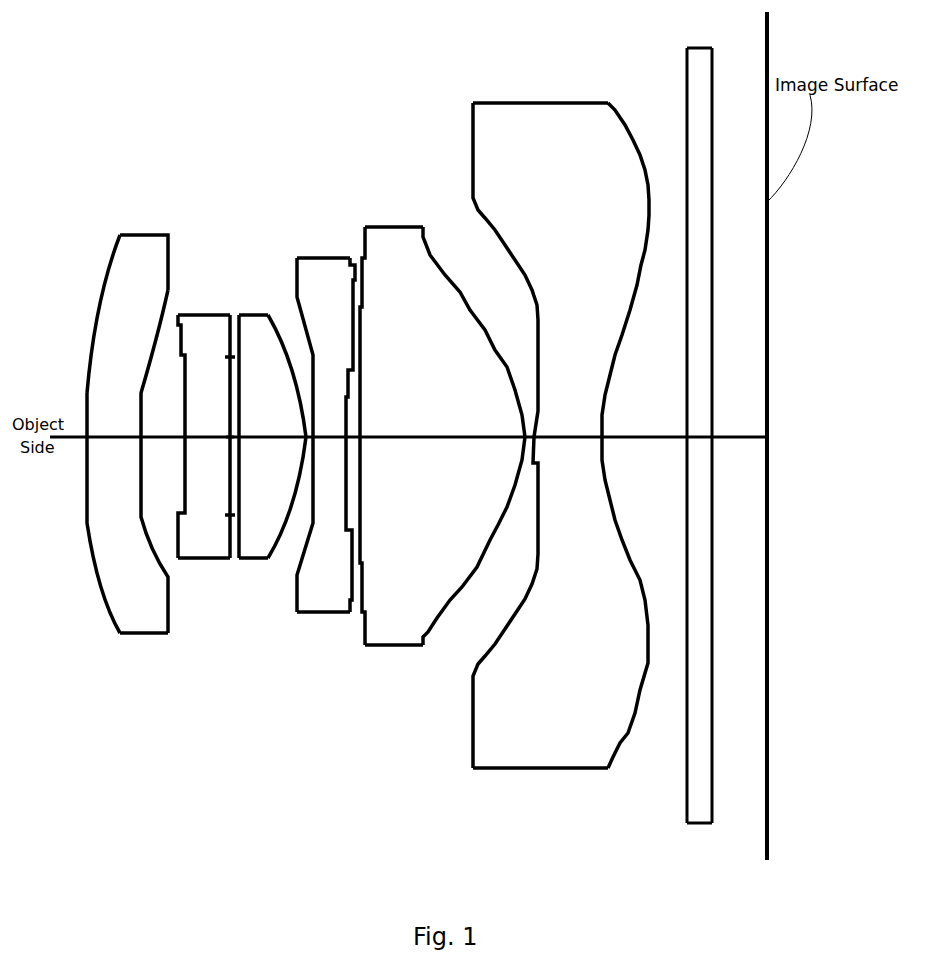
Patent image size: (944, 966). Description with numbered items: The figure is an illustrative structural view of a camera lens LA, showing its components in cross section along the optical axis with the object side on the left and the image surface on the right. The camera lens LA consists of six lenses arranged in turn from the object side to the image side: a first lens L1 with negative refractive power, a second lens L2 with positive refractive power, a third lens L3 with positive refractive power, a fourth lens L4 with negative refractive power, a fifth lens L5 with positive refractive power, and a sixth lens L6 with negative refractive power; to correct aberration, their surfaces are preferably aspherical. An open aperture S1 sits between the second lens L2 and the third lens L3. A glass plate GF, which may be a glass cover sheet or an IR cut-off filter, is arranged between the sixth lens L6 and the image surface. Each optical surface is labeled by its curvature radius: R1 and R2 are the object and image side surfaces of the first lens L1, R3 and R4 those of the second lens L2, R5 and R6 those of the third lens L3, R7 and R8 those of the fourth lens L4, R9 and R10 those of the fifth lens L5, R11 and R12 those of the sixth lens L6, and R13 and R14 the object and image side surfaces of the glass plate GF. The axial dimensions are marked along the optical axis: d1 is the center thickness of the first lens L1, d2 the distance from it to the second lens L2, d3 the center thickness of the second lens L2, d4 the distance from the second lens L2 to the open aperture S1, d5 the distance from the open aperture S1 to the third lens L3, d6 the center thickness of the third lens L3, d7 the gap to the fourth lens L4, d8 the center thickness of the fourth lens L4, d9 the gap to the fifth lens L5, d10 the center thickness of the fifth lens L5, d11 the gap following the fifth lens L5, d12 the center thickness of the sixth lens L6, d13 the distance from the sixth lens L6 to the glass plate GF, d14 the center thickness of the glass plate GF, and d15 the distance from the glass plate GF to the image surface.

The camera lens LA is at (168, 172).
The first lens L1 is at (100, 434).
The second lens L2 is at (182, 498).
The third lens L3 is at (259, 501).
The fourth lens L4 is at (312, 509).
The fifth lens L5 is at (428, 509).
The sixth lens L6 is at (523, 472).
The glass plate GF is at (660, 455).
The open aperture S1 is at (232, 352).
The curvature radius of the object side surface of the first lens R1 is at (87, 447).
The curvature radius of the image side surface of the first lens R2 is at (140, 452).
The curvature radius of the object side surface of the second lens R3 is at (183, 455).
The curvature radius of the image side surface of the second lens R4 is at (230, 455).
The curvature radius of the object side surface of the third lens R5 is at (238, 458).
The curvature radius of the image side surface of the third lens R6 is at (303, 455).
The curvature radius of the object side surface of the fourth lens R7 is at (313, 455).
The curvature radius of the image side surface of the fourth lens R8 is at (346, 455).
The curvature radius of the object side surface of the fifth lens R9 is at (360, 455).
The curvature radius of the image side surface of the fifth lens R10 is at (523, 452).
The curvature radius of the object side surface of the sixth lens R11 is at (533, 485).
The curvature radius of the image side surface of the sixth lens R12 is at (605, 488).
The curvature radius of the object side surface of the glass plate R13 is at (687, 625).
The curvature radius of the image side surface of the glass plate R14 is at (712, 630).
The center thickness of the first lens d1 is at (114, 427).
The axial distance from the first lens to the second lens d2 is at (163, 427).
The center thickness of the second lens d3 is at (207, 427).
The axial distance from the second lens to the open aperture d4 is at (228, 437).
The axial distance from the open aperture to the third lens d5 is at (243, 437).
The center thickness of the third lens d6 is at (272, 427).
The axial distance from the third lens to the fourth lens d7 is at (309, 437).
The center thickness of the fourth lens d8 is at (329, 427).
The axial distance from the fourth lens to the fifth lens d9 is at (355, 437).
The center thickness of the fifth lens d10 is at (442, 427).
The axial distance from the fifth lens to the sixth lens d11 is at (527, 437).
The center thickness of the sixth lens d12 is at (568, 427).
The axial distance from the sixth lens to the glass plate d13 is at (644, 427).
The center thickness of the glass plate d14 is at (700, 437).
The axial distance from the glass plate to the image surface d15 is at (739, 427).